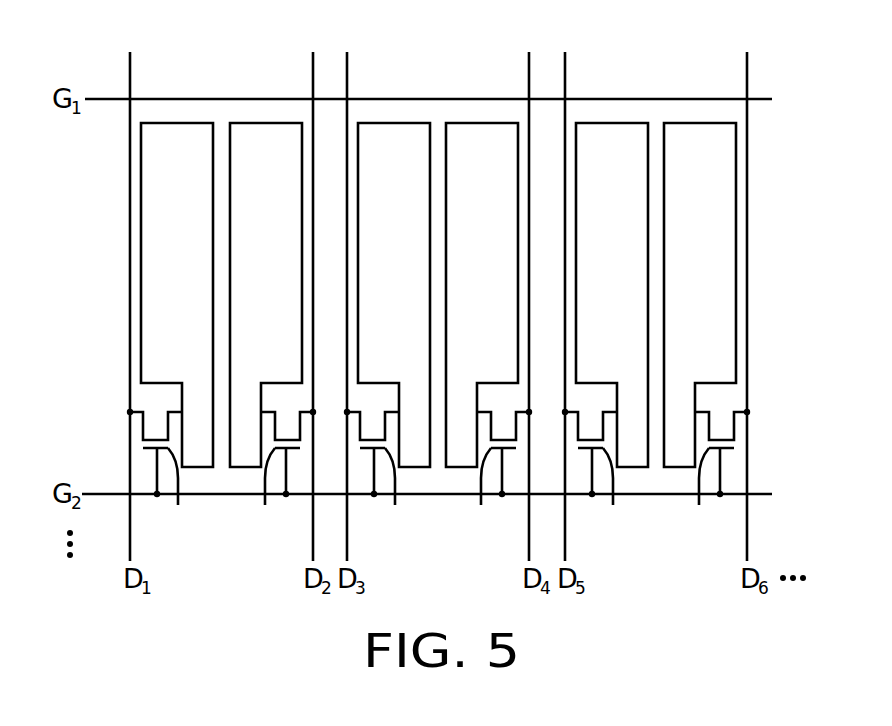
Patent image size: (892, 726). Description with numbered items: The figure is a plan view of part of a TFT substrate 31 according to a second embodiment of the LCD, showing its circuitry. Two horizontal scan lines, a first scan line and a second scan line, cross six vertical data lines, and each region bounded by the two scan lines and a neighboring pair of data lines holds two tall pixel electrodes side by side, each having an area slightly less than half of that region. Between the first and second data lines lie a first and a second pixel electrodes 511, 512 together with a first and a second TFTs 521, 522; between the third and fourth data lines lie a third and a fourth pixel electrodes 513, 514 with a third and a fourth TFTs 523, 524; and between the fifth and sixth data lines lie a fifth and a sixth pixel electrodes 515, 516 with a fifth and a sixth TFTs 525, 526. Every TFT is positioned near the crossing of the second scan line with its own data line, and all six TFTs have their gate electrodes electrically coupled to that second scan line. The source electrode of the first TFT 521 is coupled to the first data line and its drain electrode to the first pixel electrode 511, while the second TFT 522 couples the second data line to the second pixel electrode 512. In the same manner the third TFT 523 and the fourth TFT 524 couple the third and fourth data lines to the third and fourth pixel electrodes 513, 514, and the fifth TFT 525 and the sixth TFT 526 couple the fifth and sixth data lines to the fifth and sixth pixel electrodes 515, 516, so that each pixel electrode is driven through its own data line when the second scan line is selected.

The TFT substrate 31 is at (438, 36).
The first pixel electrode 511 is at (175, 146).
The second pixel electrode 512 is at (265, 144).
The third pixel electrode 513 is at (397, 146).
The fourth pixel electrode 514 is at (477, 146).
The fifth pixel electrode 515 is at (600, 146).
The sixth pixel electrode 516 is at (691, 146).
The first TFT 521 is at (165, 474).
The second TFT 522 is at (280, 474).
The third TFT 523 is at (383, 474).
The fourth TFT 524 is at (496, 474).
The fifth TFT 525 is at (601, 474).
The sixth TFT 526 is at (715, 475).